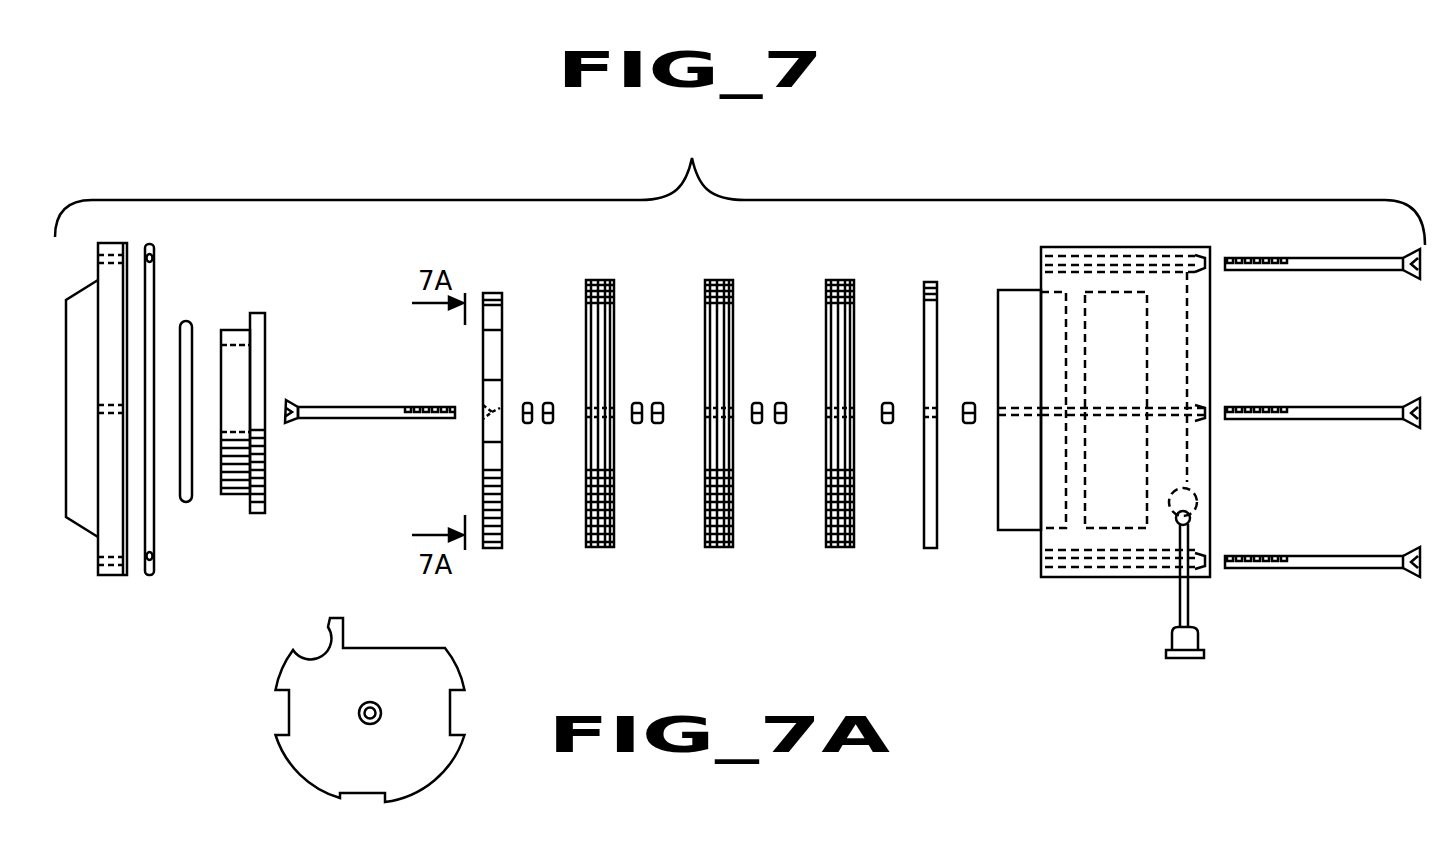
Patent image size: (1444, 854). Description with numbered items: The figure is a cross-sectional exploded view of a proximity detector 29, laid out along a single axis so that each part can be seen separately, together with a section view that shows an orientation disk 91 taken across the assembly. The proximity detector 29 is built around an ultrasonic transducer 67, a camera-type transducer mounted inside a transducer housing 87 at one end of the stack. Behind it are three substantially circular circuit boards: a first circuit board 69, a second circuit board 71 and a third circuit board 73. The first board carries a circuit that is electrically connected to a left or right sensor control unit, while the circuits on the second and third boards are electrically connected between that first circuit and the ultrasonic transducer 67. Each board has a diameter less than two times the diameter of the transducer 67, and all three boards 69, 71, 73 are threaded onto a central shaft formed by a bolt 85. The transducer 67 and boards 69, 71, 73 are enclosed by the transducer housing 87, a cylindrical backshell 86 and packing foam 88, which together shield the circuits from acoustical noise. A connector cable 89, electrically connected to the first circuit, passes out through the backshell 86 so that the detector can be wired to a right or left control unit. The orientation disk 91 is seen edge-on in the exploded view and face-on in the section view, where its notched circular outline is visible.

In FIG. 7, the proximity detector 29 is at (971, 620).
In FIG. 7, the ultrasonic transducer 67 is at (236, 500).
In FIG. 7, the first circuit board 69 is at (843, 548).
In FIG. 7, the second circuit board 71 is at (722, 548).
In FIG. 7, the third circuit board 73 is at (605, 548).
In FIG. 7, the bolt 85 is at (402, 405).
In FIG. 7, the cylindrical backshell 86 is at (1060, 275).
In FIG. 7, the transducer housing 87 is at (105, 548).
In FIG. 7, the packing foam 88 is at (1018, 532).
In FIG. 7, the connector cable 89 is at (1180, 600).
In FIG. 7, the orientation disk 91 is at (504, 302).
In FIG. 7A, the orientation disk 91 is at (303, 707).